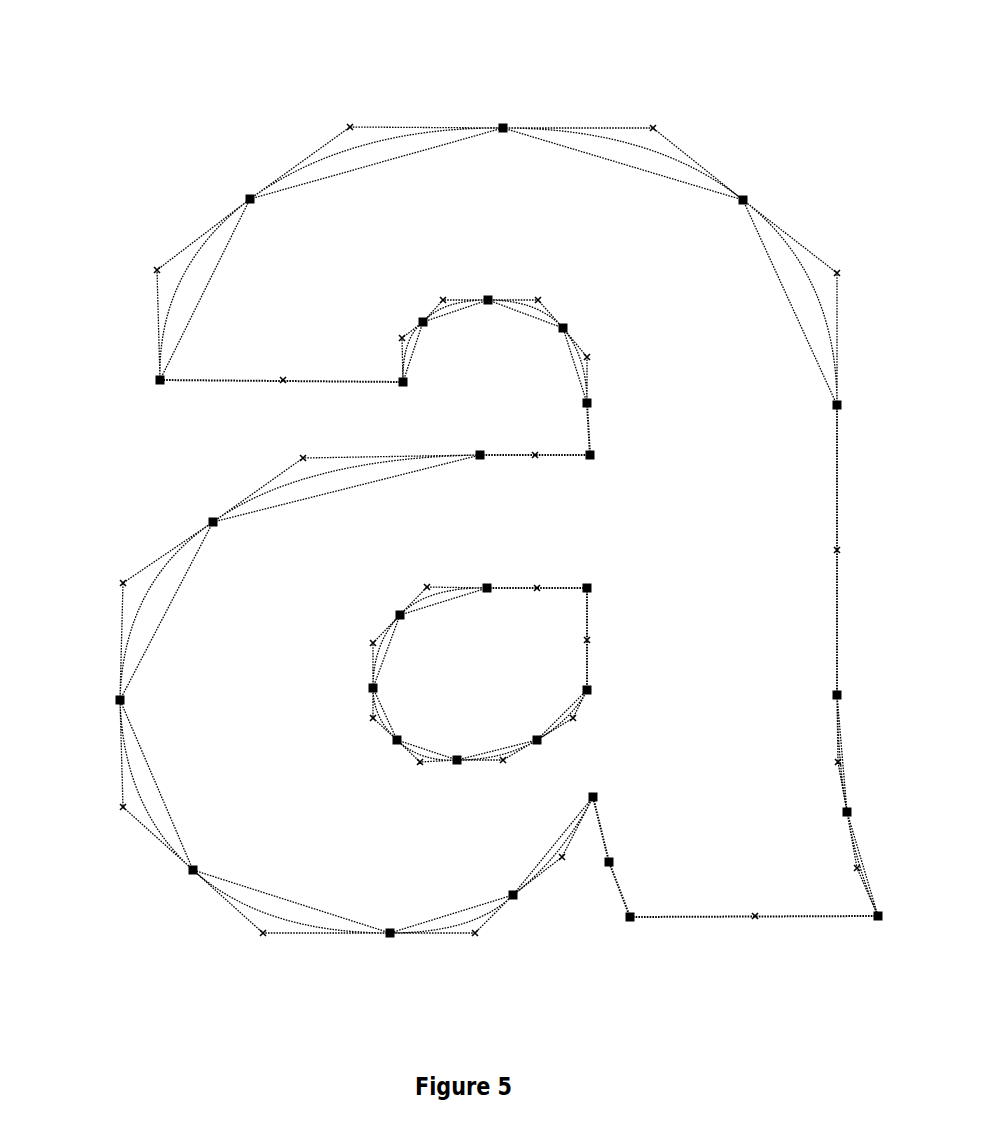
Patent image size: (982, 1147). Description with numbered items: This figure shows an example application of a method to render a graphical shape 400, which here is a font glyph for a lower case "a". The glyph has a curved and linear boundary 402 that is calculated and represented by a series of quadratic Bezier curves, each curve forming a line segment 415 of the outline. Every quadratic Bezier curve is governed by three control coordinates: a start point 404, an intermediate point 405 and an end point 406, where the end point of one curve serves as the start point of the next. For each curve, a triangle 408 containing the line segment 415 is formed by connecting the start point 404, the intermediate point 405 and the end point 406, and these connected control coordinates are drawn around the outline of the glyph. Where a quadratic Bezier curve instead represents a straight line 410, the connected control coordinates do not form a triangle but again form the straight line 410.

The graphical shape 400 is at (112, 85).
The boundary 402 is at (372, 143).
The start point 404 is at (211, 521).
The intermediate point 405 is at (303, 457).
The end point 406 is at (483, 453).
The triangle 408 is at (264, 588).
The straight line 410 is at (610, 447).
The line segment 415 is at (367, 468).